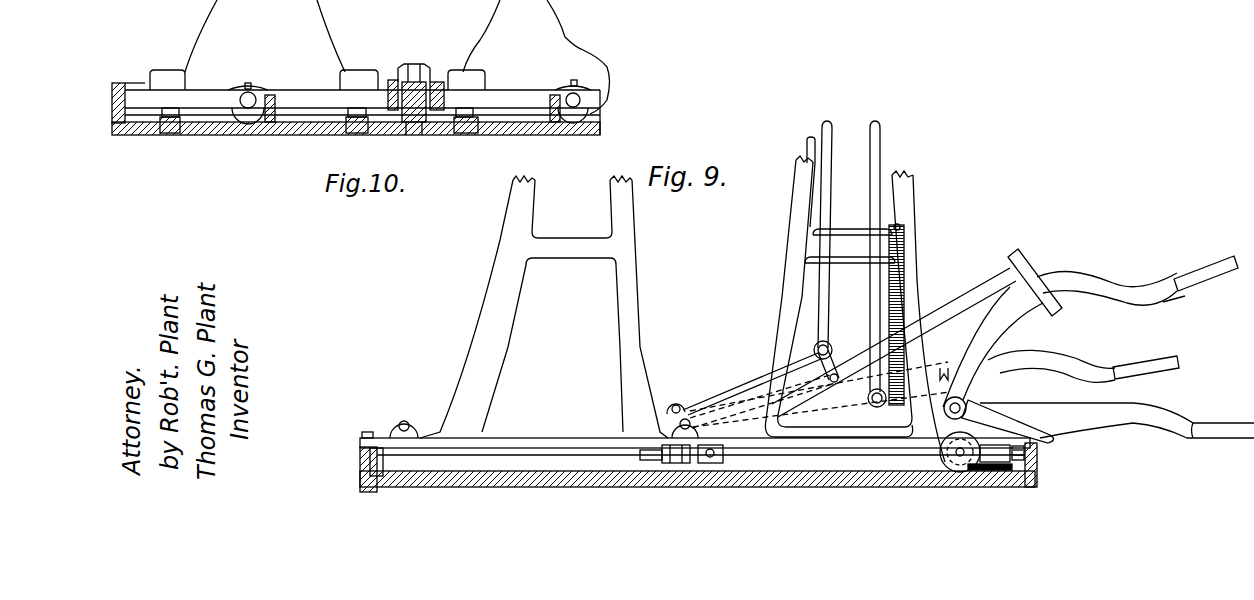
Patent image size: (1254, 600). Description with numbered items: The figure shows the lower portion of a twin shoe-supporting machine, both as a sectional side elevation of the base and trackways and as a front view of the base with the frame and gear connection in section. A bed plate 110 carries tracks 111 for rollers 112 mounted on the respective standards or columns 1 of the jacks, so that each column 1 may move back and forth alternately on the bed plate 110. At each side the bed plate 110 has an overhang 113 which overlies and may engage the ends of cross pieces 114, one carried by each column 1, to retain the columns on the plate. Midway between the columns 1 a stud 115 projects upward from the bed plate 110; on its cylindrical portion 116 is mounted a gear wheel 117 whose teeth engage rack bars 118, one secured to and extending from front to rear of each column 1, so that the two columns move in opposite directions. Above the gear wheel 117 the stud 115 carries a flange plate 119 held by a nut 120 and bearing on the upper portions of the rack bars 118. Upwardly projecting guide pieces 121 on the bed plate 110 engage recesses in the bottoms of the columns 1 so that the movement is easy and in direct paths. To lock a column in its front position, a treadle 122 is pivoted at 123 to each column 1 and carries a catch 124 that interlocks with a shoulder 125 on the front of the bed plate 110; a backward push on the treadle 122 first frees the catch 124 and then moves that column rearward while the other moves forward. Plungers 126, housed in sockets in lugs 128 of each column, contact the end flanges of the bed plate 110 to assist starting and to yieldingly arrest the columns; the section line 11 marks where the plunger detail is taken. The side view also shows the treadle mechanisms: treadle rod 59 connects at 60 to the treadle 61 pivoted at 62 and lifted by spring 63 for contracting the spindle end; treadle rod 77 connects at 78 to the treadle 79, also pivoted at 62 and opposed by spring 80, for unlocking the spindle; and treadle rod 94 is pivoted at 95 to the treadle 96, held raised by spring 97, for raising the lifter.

In FIG. 9, the column 1 is at (626, 244).
In FIG. 10, the section line 11— 11 is at (248, 182).
In FIG. 9, the treadle rod 59 is at (811, 139).
In FIG. 9, the connection of treadle rod to treadle 60 is at (817, 349).
In FIG. 9, the treadle 61 is at (947, 303).
In FIG. 9, the treadle pivot 62 is at (688, 418).
In FIG. 9, the lifting spring 63 is at (902, 296).
In FIG. 9, the treadle rod 77 is at (881, 151).
In FIG. 9, the connection of treadle rod to treadle 78 is at (878, 405).
In FIG. 9, the treadle 79 is at (1066, 396).
In FIG. 9, the spring 80 is at (918, 357).
In FIG. 9, the treadle rod 94 is at (831, 128).
In FIG. 9, the pivot of treadle rod to treadle 95 is at (830, 376).
In FIG. 9, the treadle 96 is at (1001, 347).
In FIG. 9, the spring 97 is at (915, 331).
In FIG. 10, the bed plate 110 is at (546, 131).
In FIG. 9, the bed plate 110 is at (575, 482).
In FIG. 10, the tracks 111 is at (164, 122).
In FIG. 10, the rollers 112 is at (172, 118).
In FIG. 9, the rollers 112 is at (970, 466).
In FIG. 10, the overhang 113 is at (117, 83).
In FIG. 10, the cross pieces 114 is at (138, 96).
In FIG. 10, the stud 115 is at (412, 125).
In FIG. 10, the cylindrical portion 116 is at (418, 92).
In FIG. 10, the gear wheel 117 is at (392, 82).
In FIG. 9, the gear wheel 117 is at (700, 465).
In FIG. 10, the rack bars 118 is at (460, 97).
In FIG. 10, the flange plate 119 is at (378, 86).
In FIG. 10, the nut 120 is at (410, 64).
In FIG. 10, the guide pieces 121 is at (268, 95).
In FIG. 9, the treadle 122 is at (1015, 305).
In FIG. 9, the pivot 123 is at (965, 405).
In FIG. 9, the catch 124 is at (1050, 439).
In FIG. 9, the shoulder 125 is at (1040, 455).
In FIG. 10, the plungers 126 is at (250, 108).
In FIG. 9, the plungers 126 is at (665, 465).
In FIG. 10, the lugs 128 is at (583, 83).